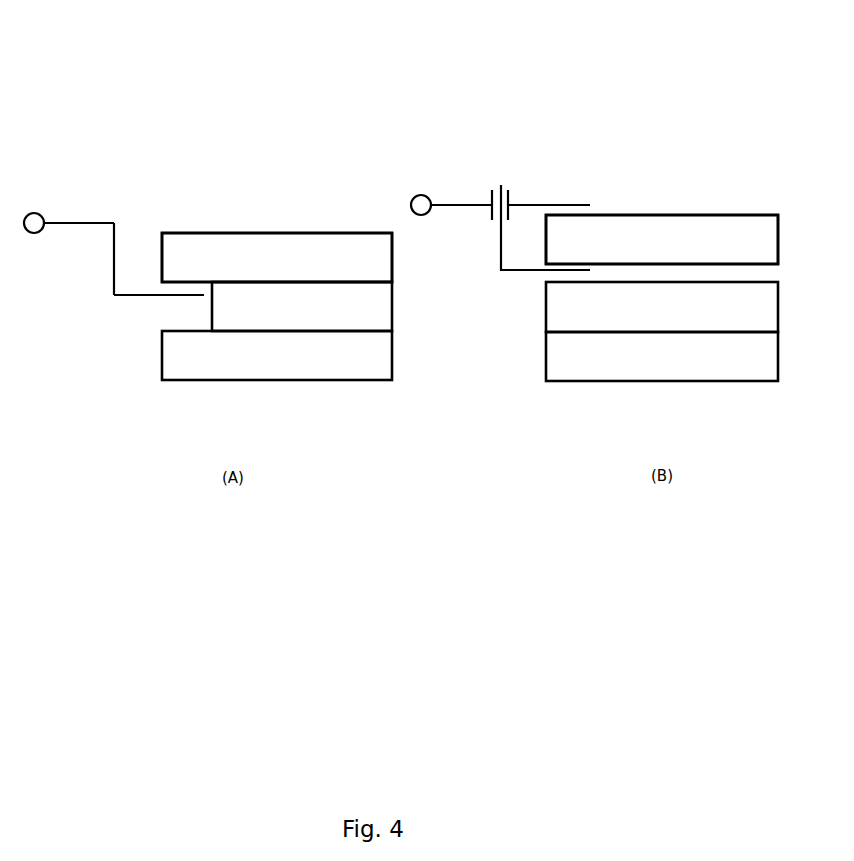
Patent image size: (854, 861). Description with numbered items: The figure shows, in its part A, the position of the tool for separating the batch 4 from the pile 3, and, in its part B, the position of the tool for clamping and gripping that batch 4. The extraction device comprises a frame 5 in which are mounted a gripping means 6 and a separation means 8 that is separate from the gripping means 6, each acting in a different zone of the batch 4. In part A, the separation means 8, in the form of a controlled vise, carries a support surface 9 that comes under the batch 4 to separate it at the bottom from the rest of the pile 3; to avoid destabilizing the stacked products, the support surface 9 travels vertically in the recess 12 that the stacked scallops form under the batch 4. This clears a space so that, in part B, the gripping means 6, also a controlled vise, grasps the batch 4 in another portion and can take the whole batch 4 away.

The pile 3 is at (274, 131).
The batch 4 is at (328, 245).
The frame 5 is at (70, 131).
The gripping means 6 is at (490, 350).
The separation means 8 is at (116, 321).
The support surface 9 is at (134, 267).
The recess 12 is at (190, 322).